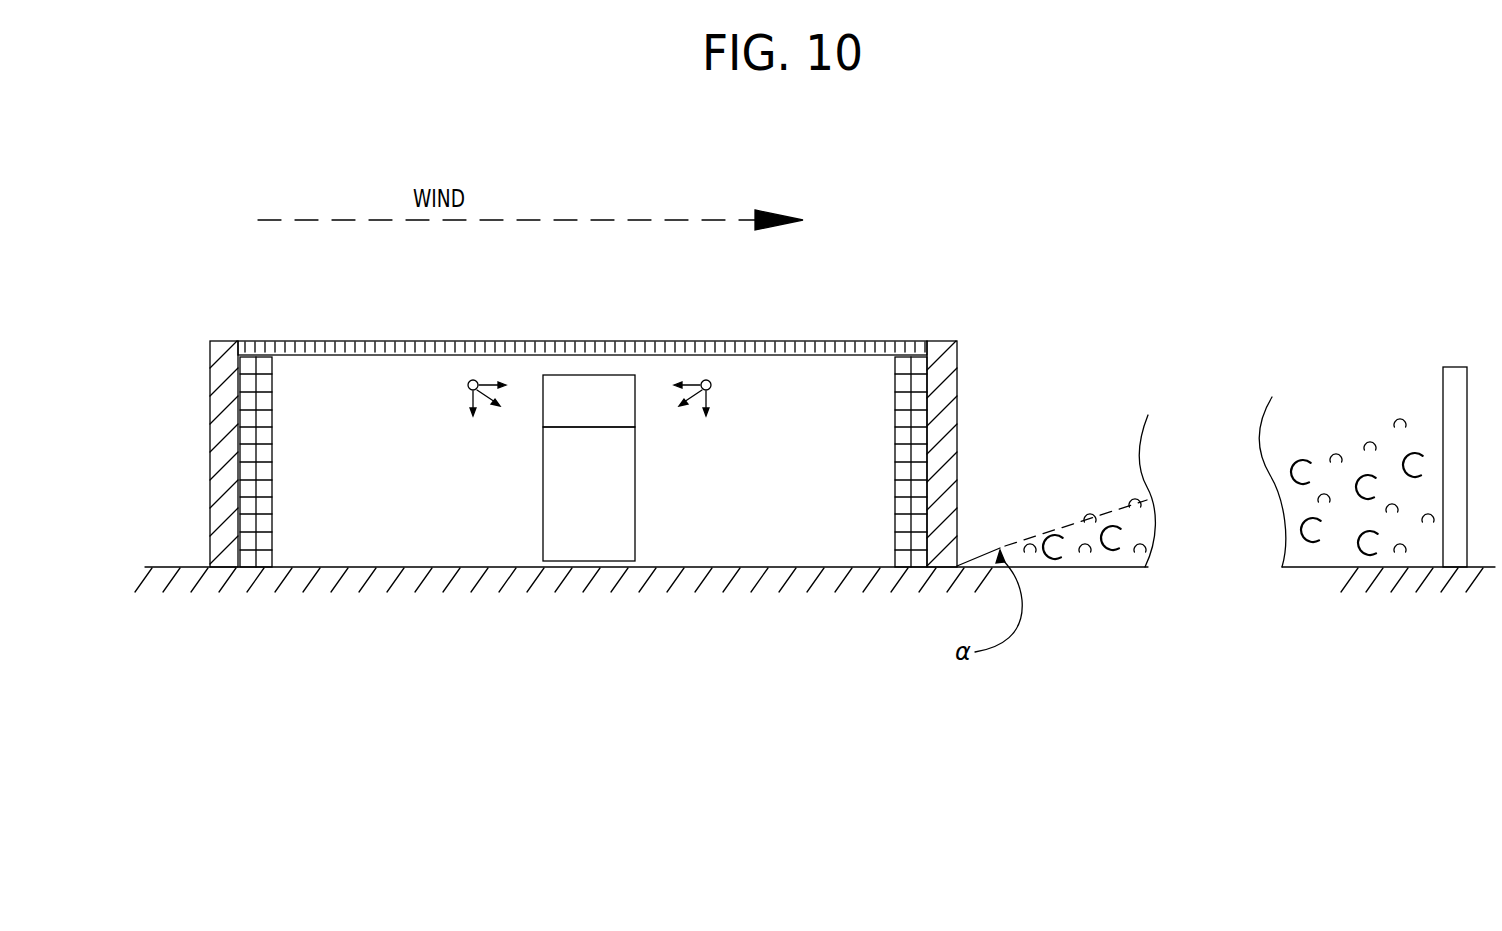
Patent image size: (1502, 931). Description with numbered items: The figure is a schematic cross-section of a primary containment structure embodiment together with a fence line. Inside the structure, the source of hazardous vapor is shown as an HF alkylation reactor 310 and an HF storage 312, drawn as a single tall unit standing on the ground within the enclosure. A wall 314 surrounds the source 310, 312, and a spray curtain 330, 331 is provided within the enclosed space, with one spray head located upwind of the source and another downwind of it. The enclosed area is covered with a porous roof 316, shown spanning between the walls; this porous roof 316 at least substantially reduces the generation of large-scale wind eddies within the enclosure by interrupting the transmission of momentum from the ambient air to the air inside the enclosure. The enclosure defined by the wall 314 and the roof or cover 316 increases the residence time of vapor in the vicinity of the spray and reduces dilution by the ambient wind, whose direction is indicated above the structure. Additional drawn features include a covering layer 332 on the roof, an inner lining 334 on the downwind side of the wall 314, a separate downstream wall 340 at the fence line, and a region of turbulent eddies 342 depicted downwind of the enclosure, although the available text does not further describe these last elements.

The HF alkylation reactor 310 is at (635, 412).
The HF storage 312 is at (635, 486).
The wall 314 is at (957, 488).
The porous roof 316 is at (757, 341).
The spray curtain 330 is at (467, 383).
The spray curtain 331 is at (713, 384).
The roof covering 332 is at (618, 341).
The inner wall liner 334 is at (898, 413).
The downstream barrier wall 340 is at (1467, 402).
The turbulent wake vortices 342 is at (1085, 483).